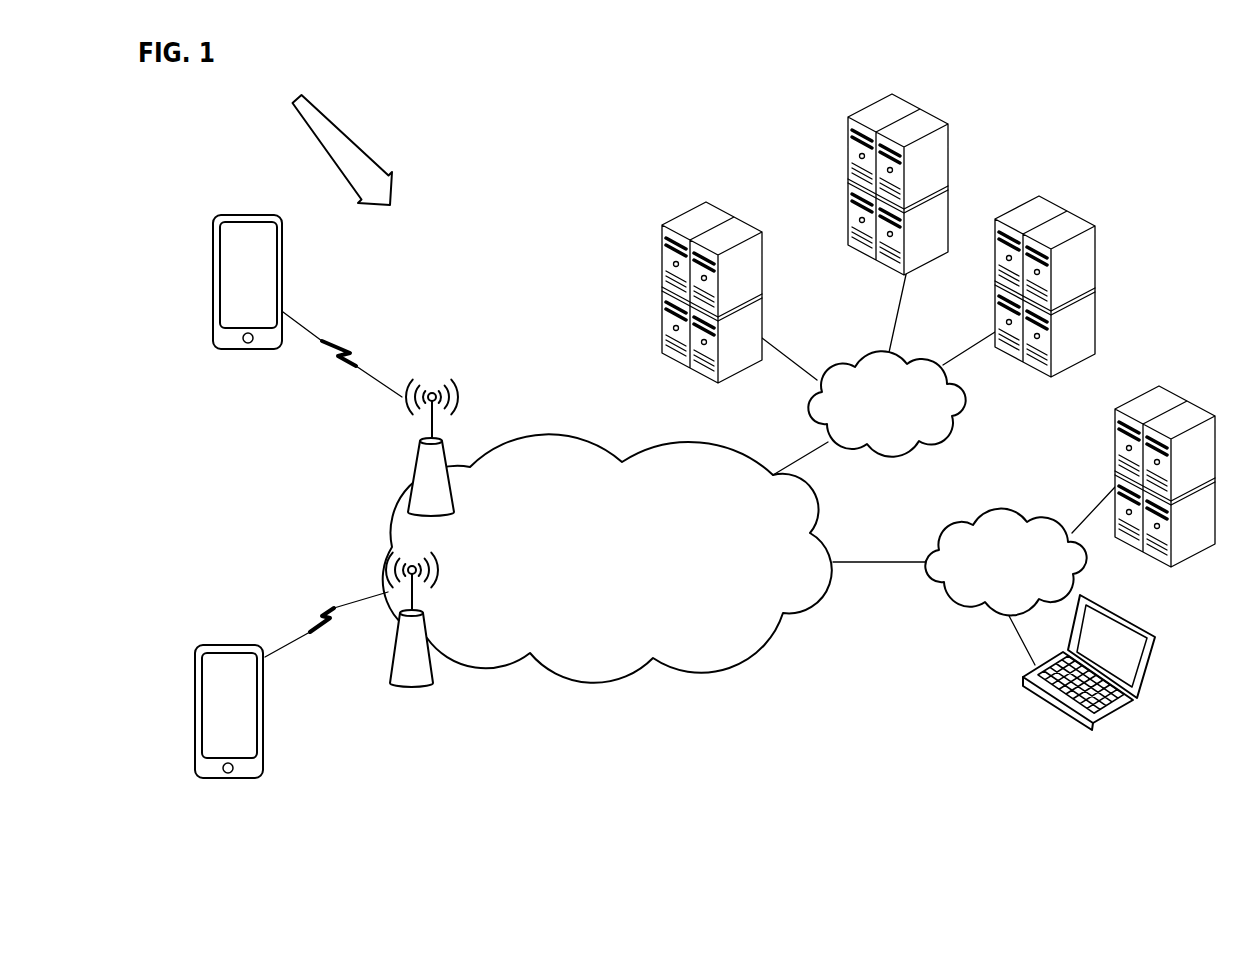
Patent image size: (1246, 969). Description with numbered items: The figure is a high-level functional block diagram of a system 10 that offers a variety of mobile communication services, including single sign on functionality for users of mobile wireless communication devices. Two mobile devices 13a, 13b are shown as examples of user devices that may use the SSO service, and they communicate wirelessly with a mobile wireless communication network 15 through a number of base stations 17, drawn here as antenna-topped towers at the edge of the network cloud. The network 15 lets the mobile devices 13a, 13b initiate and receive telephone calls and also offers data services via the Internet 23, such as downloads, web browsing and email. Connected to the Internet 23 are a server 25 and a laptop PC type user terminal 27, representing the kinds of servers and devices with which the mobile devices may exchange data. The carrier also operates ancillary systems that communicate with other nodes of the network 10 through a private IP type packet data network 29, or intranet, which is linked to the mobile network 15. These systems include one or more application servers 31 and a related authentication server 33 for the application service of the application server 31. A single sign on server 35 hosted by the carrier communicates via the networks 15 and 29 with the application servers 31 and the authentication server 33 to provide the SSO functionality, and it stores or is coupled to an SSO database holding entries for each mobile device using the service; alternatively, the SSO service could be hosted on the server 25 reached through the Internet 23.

The system 10 is at (332, 139).
The mobile device 13a is at (213, 258).
The mobile device 13b is at (195, 655).
The mobile wireless communication network 15 is at (503, 444).
The base station 17 is at (416, 463).
The Internet 23 is at (950, 604).
The server 25 is at (1115, 472).
The laptop PC type user terminal 27 is at (1052, 712).
The private IP type packet data network 29 is at (963, 412).
The application server 31 is at (762, 245).
The authentication server 33 is at (948, 185).
The single sign on (SSO) server 35 is at (1095, 290).